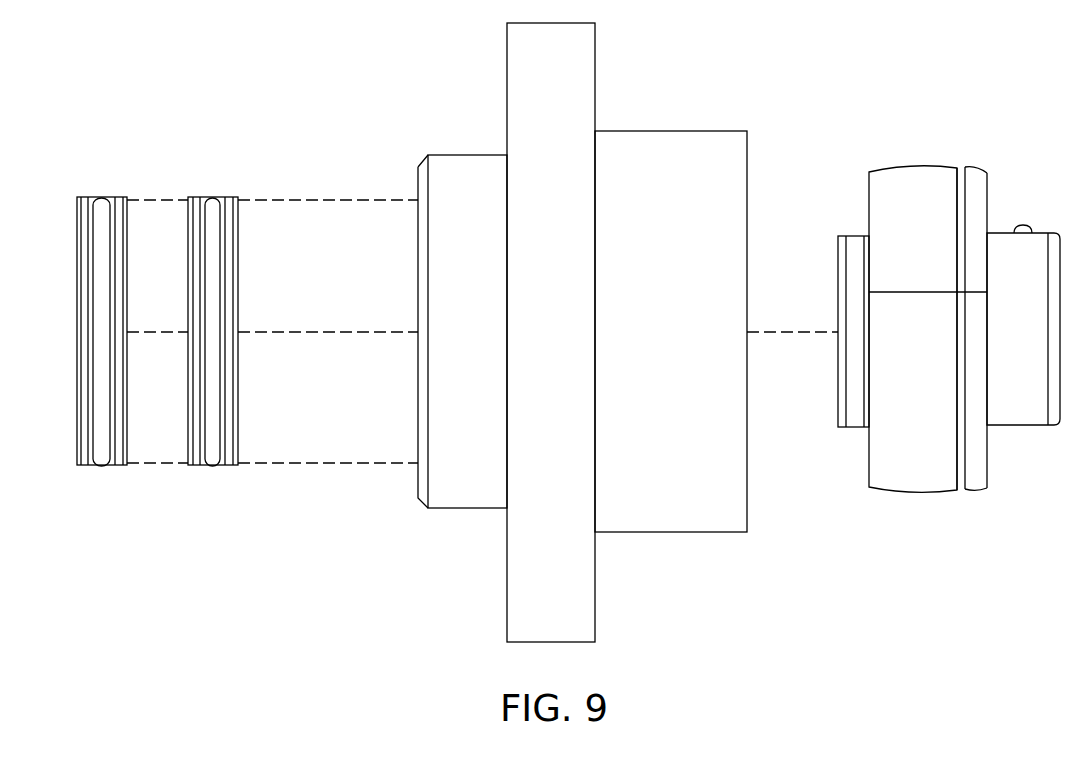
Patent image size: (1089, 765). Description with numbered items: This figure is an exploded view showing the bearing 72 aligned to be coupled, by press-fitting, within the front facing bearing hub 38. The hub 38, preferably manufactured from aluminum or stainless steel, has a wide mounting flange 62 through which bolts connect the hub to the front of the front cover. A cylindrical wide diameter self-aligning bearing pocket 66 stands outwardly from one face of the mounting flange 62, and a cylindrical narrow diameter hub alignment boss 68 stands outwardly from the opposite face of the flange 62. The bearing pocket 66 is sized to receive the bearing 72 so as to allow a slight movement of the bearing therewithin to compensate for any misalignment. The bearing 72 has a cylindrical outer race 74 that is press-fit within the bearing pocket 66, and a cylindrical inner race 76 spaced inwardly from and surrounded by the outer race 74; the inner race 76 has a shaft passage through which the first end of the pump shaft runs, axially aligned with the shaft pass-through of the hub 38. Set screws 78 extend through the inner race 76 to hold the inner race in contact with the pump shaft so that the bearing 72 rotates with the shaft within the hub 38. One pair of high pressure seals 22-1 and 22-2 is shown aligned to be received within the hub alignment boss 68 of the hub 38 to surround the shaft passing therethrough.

The high pressure seal 22-1 is at (102, 197).
The high pressure seal 22-2 is at (213, 197).
The hub 38 is at (594, 332).
The mounting flange 62 is at (559, 533).
The self-aligning bearing pocket 66 is at (732, 532).
The hub alignment boss 68 is at (445, 498).
The bearing 72 is at (949, 326).
The outer race 74 is at (910, 482).
The inner race 76 is at (1030, 425).
The set screw 78 is at (1023, 224).